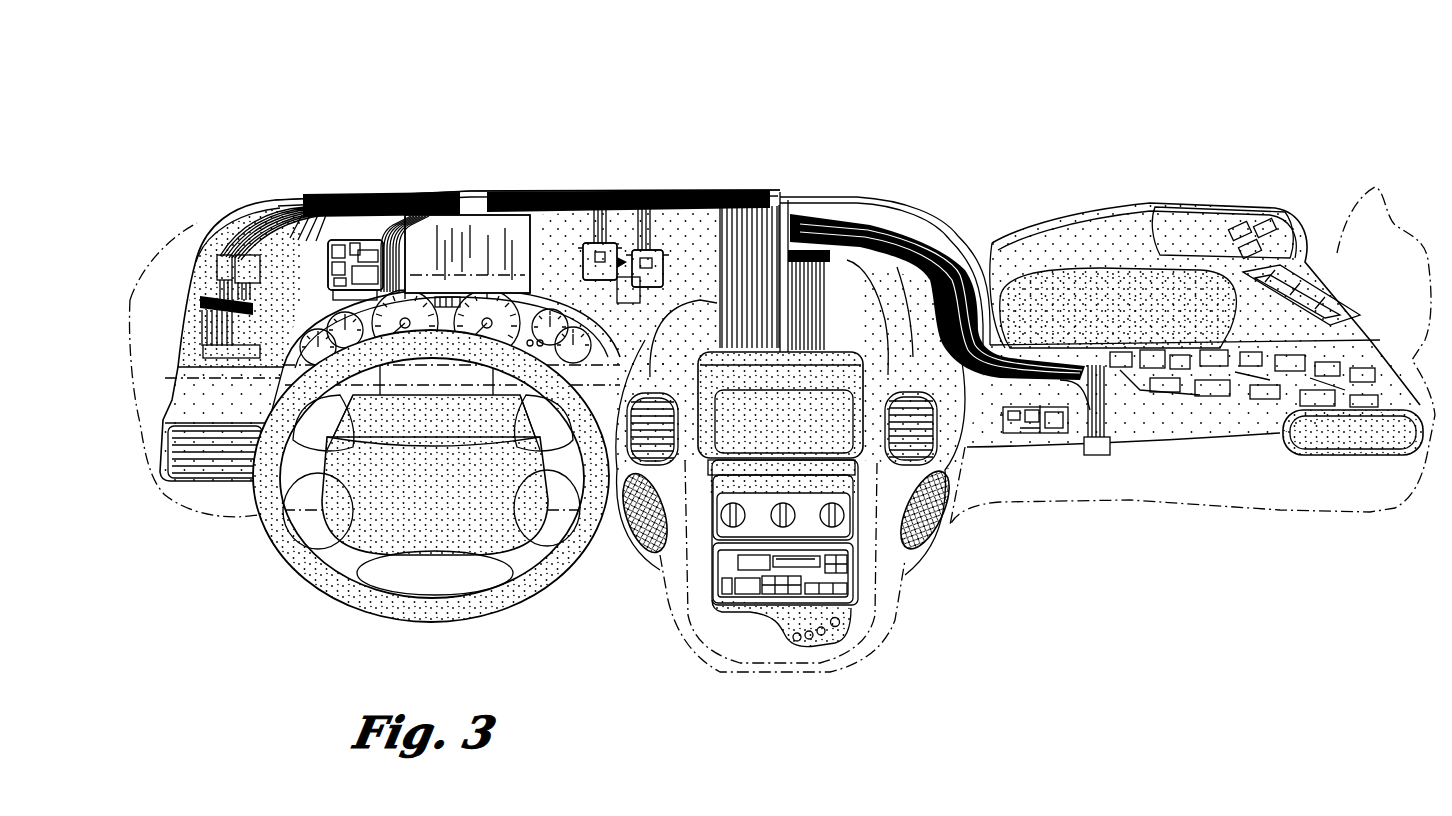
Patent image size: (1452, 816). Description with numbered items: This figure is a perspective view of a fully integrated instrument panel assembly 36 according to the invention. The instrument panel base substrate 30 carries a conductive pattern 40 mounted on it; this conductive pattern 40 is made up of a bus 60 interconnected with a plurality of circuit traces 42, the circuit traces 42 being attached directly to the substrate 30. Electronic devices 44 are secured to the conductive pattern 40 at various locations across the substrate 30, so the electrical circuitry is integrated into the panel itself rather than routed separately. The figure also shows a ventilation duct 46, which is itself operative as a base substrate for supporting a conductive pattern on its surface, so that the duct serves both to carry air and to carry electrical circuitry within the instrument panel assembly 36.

The instrument panel assembly 36 is at (236, 188).
The instrument panel base substrate 30 is at (468, 200).
The circuit traces 42 is at (507, 193).
The electronic devices 44 is at (352, 237).
The bus 60 is at (650, 195).
The conductive pattern 40 is at (752, 197).
The ventilation duct 46 is at (873, 217).